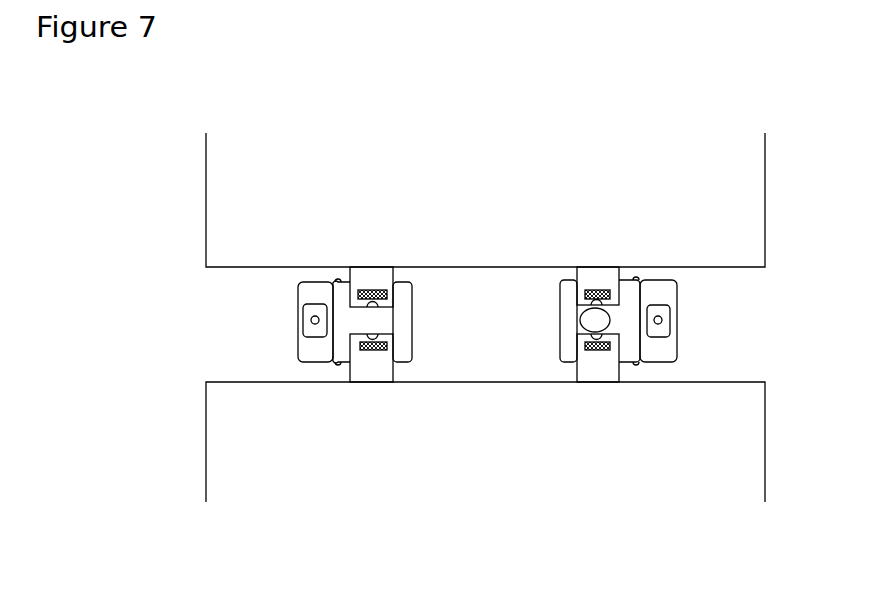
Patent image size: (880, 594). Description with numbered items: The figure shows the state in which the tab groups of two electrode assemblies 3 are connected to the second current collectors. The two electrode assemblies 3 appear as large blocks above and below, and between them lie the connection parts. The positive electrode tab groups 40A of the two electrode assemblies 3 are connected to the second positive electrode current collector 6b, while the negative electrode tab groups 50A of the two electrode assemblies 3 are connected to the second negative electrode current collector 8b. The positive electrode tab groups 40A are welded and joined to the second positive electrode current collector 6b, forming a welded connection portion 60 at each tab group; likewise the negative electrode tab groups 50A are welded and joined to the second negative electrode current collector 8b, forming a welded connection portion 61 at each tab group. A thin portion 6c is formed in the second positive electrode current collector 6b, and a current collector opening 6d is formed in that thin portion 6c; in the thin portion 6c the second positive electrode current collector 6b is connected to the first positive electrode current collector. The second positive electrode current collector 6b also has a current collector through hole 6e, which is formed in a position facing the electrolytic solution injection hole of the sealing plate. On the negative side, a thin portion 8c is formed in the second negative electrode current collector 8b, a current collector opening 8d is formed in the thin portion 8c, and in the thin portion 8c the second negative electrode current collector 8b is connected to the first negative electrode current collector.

The electrode assembly 3 is at (727, 228).
The negative electrode tab group 50A is at (370, 276).
The positive electrode tab group 40A is at (597, 278).
The welded connection portion 61 is at (390, 287).
The welded connection portion 60 is at (585, 291).
The current collector through hole 6e is at (580, 320).
The second positive electrode current collector 6b is at (668, 288).
The thin portion 6c is at (663, 335).
The current collector opening 6d is at (662, 320).
The second negative electrode current collector 8b is at (300, 286).
The thin portion 8c is at (306, 336).
The current collector opening 8d is at (311, 319).